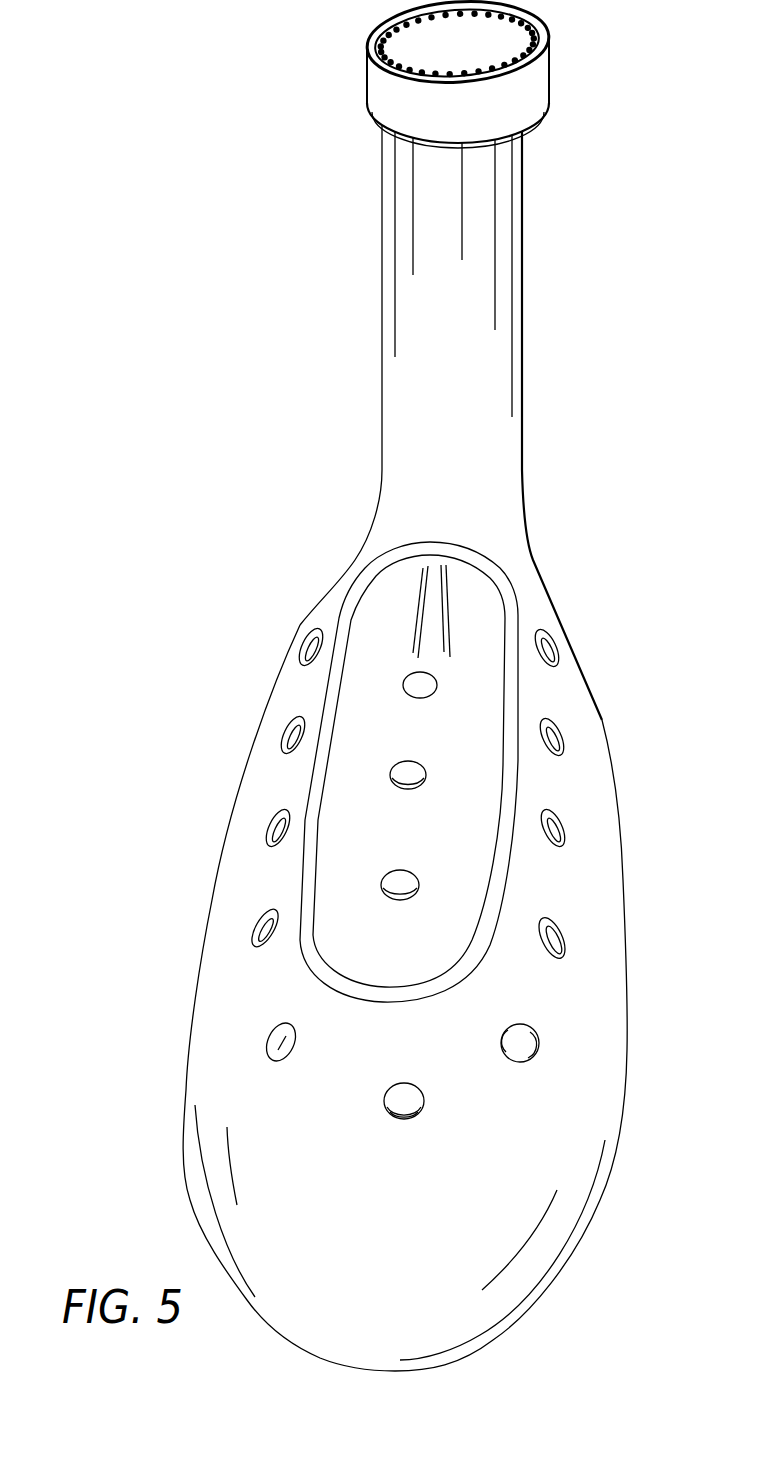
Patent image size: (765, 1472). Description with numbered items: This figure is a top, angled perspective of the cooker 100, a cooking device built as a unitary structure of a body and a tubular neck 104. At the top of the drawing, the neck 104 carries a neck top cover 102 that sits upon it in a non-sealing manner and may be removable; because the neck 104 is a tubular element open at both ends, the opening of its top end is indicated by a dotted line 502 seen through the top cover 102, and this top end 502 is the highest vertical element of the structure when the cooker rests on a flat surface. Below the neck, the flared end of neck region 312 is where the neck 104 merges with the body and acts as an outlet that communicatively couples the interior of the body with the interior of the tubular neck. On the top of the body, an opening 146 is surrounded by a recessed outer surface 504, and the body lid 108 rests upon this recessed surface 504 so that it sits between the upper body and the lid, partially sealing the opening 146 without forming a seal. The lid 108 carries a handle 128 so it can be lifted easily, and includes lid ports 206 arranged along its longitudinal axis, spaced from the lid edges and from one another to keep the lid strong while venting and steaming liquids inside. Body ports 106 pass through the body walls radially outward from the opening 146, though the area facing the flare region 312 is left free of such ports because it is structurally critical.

The cooker 100 is at (118, 115).
The neck top cover 102 is at (547, 110).
The neck portion 104 is at (565, 335).
The body ports 106 is at (557, 962).
The body lid 108 is at (381, 683).
The handle 128 is at (428, 573).
The opening 146 is at (310, 778).
The lid ports 206 is at (408, 892).
The flared end of neck region 312 is at (355, 505).
The top end opening of the neck 502 is at (545, 58).
The recessed outer surface 504 is at (325, 720).